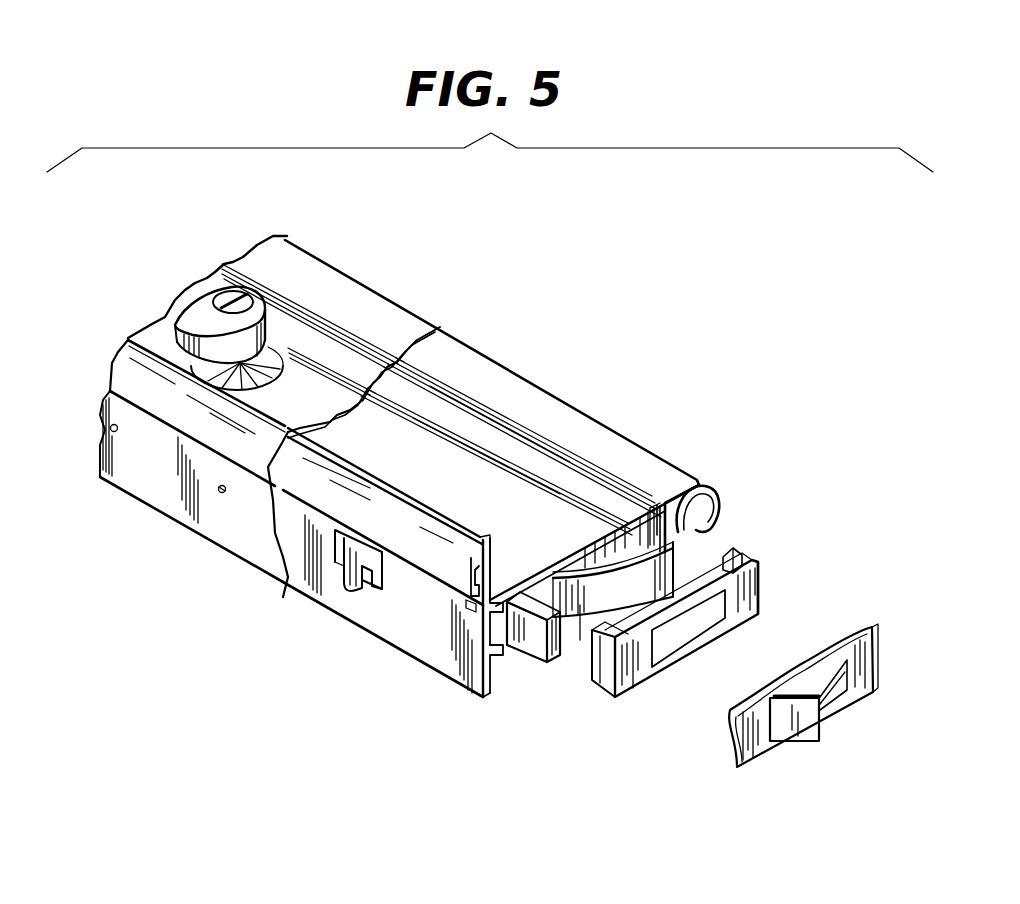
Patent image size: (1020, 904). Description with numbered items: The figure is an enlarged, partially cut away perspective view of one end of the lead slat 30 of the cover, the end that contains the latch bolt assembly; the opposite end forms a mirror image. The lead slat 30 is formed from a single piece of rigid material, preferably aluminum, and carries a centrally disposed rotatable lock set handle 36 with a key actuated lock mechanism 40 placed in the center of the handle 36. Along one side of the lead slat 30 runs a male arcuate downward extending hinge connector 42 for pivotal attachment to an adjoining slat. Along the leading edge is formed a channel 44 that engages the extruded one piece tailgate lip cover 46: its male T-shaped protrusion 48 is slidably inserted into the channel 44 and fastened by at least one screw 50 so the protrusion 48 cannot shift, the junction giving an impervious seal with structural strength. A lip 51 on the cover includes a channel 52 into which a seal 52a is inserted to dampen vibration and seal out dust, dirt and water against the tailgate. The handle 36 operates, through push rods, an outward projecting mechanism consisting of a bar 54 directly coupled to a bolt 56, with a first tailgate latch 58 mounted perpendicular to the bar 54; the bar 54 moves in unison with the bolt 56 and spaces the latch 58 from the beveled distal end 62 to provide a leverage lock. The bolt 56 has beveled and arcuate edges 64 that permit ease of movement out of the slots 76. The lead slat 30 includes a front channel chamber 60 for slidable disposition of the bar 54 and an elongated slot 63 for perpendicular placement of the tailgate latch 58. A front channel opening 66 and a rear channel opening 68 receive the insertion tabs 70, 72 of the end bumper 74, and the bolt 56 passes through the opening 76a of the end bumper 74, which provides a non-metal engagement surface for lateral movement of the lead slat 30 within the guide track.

The lead slat 30 is at (565, 425).
The lock set handle 36 is at (268, 318).
The key actuated lock mechanism 40 is at (225, 296).
The male arcuate downward extending hinge connector 42 is at (713, 490).
The channel 44 is at (488, 625).
The tailgate lip cover 46 is at (305, 568).
The male T-shaped protrusion 48 is at (483, 663).
The screw 50 is at (111, 432).
The lip 51 is at (443, 557).
The channel 52 is at (478, 572).
The seal 52a is at (470, 602).
The bar 54 is at (503, 652).
The bolt 56 is at (662, 553).
The tailgate latch 58 is at (345, 595).
The front channel chamber 60 is at (492, 690).
The beveled distal end 62 is at (572, 625).
The elongated slot 63 is at (377, 590).
The beveled and arcuate edges 64 is at (585, 650).
The front channel opening 66 is at (523, 598).
The rear channel opening 68 is at (660, 515).
The insertion tab 70 is at (603, 670).
The insertion tab 72 is at (747, 547).
The end bumper 74 is at (752, 608).
The slots 76 is at (832, 705).
The opening 76a is at (670, 647).